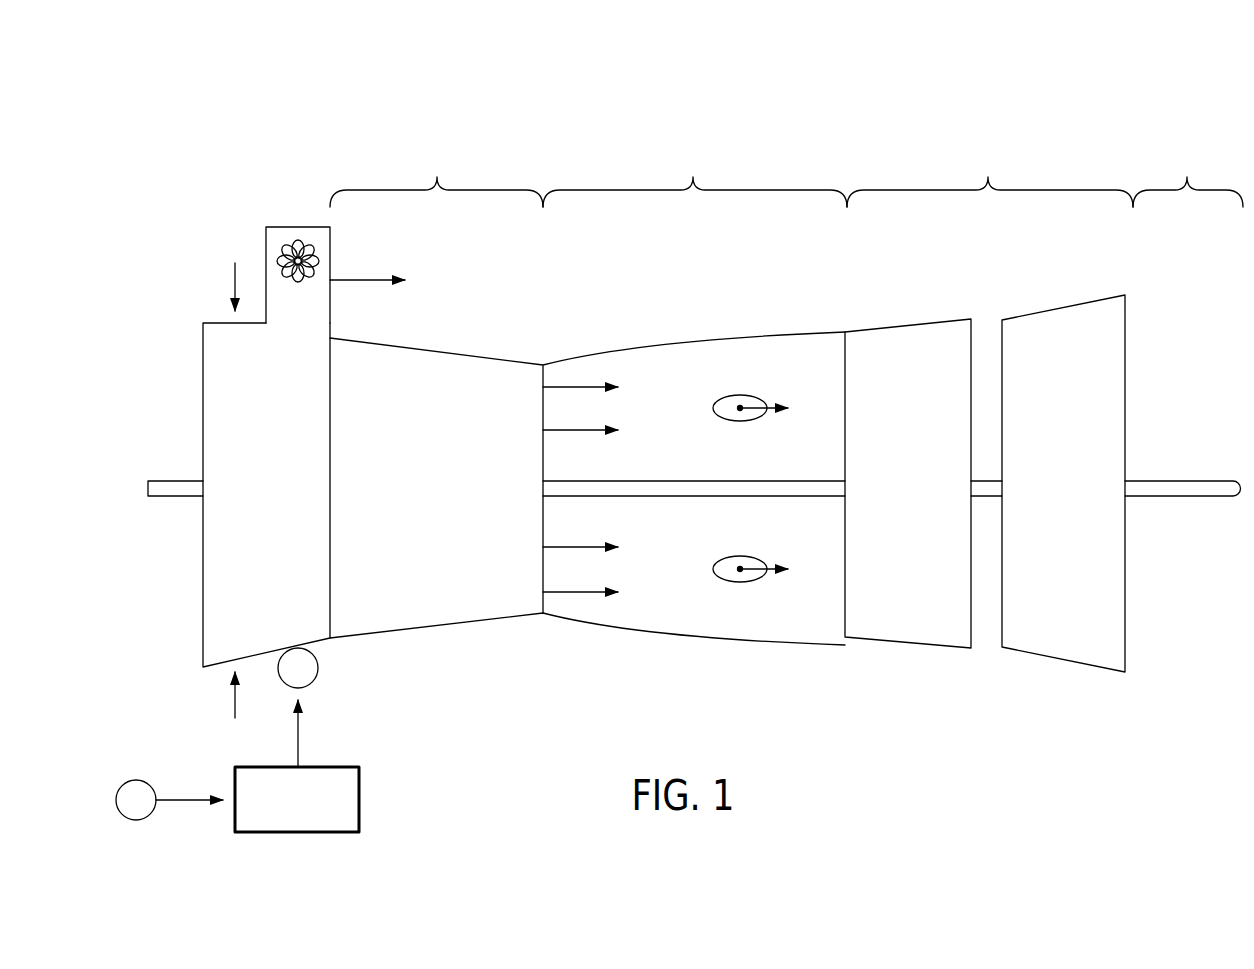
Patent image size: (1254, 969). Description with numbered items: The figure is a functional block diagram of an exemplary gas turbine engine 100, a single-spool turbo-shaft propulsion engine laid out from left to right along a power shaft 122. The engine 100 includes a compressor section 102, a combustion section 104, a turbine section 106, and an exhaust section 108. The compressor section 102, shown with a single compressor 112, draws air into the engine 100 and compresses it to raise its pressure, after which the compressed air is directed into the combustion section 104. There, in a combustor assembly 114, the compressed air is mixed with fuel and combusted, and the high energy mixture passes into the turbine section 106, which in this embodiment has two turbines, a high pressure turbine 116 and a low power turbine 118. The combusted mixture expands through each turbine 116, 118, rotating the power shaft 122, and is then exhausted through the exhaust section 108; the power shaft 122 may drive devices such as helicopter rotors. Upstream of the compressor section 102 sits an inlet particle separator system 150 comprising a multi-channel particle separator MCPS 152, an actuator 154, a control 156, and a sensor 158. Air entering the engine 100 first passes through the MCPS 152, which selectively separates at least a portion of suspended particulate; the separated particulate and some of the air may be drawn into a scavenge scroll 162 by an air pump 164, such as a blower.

The gas turbine engine 100 is at (826, 120).
The compressor section 102 is at (436, 176).
The combustion section 104 is at (695, 176).
The turbine section 106 is at (990, 176).
The exhaust section 108 is at (1188, 176).
The compressor 112 is at (425, 617).
The combustor assembly 114 is at (722, 398).
The high pressure turbine 116 is at (902, 632).
The low power turbine 118 is at (1062, 648).
The power shaft 122 is at (1180, 477).
The inlet particle separator system 150 is at (168, 305).
The multi-channel particle separator (MCPS) 152 is at (203, 606).
The actuator 154 is at (318, 667).
The control 156 is at (359, 800).
The sensor 158 is at (136, 780).
The scavenge scroll 162 is at (297, 227).
The air pump 164 is at (320, 261).